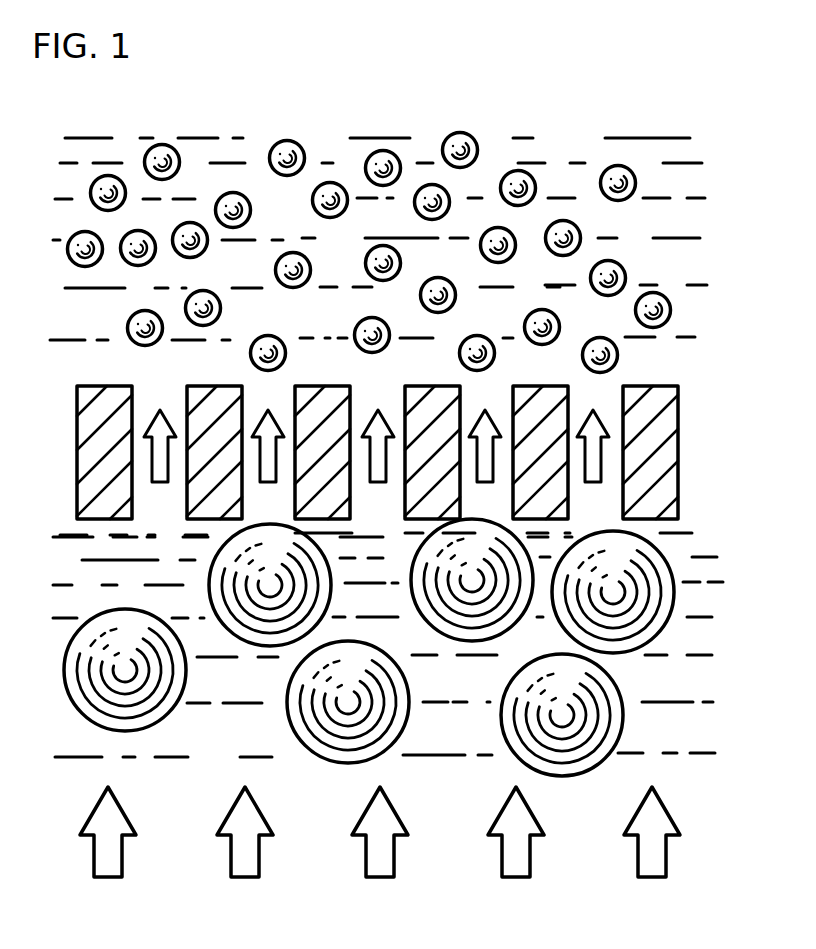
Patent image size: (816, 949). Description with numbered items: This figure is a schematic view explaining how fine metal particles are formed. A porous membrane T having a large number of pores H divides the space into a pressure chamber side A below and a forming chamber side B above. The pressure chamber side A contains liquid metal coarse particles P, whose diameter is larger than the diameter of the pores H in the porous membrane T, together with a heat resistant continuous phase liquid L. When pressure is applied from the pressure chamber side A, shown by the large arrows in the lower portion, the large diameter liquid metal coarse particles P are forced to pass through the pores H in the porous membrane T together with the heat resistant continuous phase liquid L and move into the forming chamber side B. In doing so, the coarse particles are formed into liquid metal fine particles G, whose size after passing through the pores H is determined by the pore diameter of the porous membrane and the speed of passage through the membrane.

The pressure chamber side A is at (380, 866).
The forming chamber side B is at (378, 208).
The liquid metal fine particle G is at (614, 167).
The pore H is at (598, 393).
The porous membrane T is at (672, 430).
The liquid metal coarse particle P is at (657, 617).
The heat resistant continuous phase liquid L is at (210, 753).